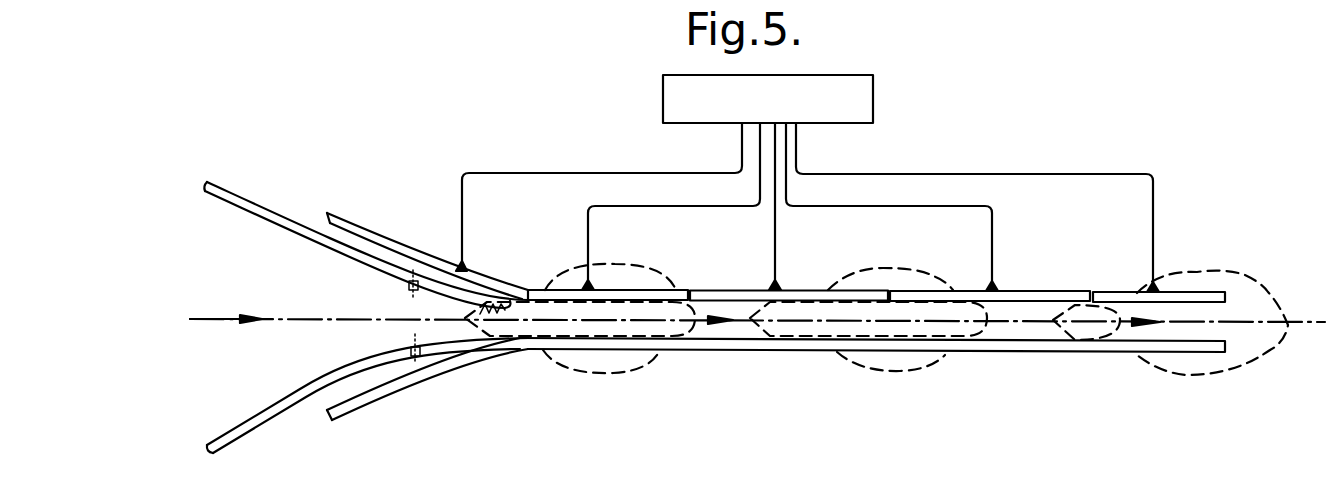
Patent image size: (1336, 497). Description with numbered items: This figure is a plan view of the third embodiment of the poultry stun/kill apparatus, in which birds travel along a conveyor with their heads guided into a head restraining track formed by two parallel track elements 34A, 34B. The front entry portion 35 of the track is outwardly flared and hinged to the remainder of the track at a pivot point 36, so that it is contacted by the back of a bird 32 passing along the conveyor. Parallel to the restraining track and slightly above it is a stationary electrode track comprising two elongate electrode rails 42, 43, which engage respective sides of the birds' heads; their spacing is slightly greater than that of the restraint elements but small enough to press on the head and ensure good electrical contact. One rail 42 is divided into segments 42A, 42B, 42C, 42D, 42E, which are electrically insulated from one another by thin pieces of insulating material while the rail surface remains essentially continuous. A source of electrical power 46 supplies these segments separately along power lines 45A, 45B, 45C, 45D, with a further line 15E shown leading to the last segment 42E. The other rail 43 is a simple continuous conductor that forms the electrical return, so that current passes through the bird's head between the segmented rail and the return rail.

The electrode lead 15E is at (1088, 174).
The bird 32 is at (583, 363).
The track element 34A is at (460, 287).
The track element 34B is at (438, 349).
The front entry portion 35 is at (262, 267).
The pivot point 36 is at (411, 282).
The electrode rail 42 is at (876, 255).
The segment 42A is at (434, 256).
The segment 42B is at (625, 290).
The segment 42C is at (742, 290).
The segment 42D is at (1017, 291).
The segment 42E is at (1200, 293).
The electrode rail 43 is at (1020, 344).
The power line 45A is at (507, 173).
The power line 45B is at (583, 222).
The power line 45C is at (776, 236).
The power line 45D is at (915, 206).
The source of electrical power 46 is at (865, 104).